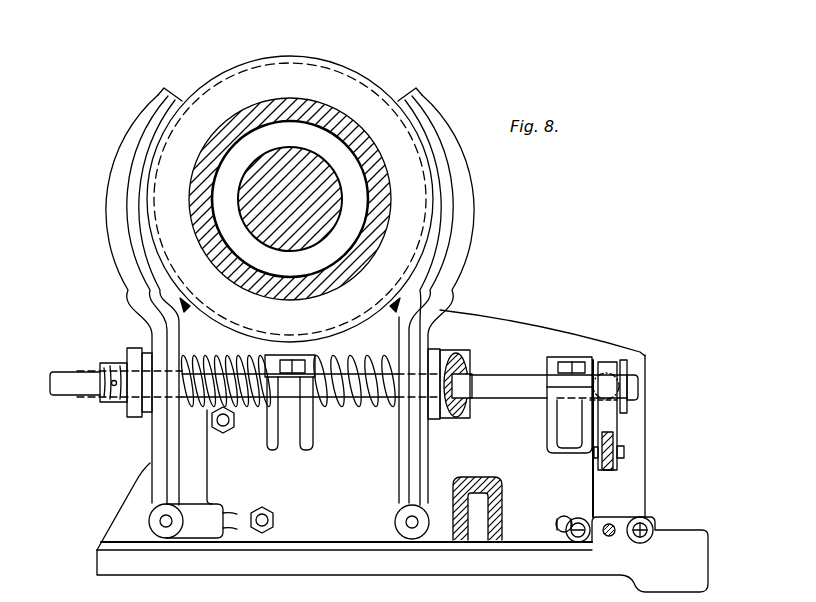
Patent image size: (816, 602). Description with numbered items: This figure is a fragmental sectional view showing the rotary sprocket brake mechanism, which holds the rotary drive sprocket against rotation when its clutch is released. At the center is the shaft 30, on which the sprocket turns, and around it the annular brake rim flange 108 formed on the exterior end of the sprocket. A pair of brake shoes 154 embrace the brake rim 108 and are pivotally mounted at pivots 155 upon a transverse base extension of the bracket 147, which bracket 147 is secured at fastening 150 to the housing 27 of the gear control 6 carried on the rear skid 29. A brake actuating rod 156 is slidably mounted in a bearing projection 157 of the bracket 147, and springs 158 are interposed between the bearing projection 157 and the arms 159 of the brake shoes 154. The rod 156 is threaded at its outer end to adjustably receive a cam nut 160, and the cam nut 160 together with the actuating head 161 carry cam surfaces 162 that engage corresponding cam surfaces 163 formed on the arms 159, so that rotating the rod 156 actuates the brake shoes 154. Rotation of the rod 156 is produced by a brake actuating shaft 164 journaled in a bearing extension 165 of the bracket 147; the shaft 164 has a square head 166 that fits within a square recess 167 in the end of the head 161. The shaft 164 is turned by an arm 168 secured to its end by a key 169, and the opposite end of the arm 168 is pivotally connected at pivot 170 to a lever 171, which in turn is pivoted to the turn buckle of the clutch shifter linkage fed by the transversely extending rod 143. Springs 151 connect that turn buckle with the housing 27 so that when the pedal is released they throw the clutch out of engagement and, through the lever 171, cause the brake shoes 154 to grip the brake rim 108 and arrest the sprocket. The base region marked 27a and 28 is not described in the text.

The gear control 6 is at (547, 323).
The housing 27 is at (648, 474).
The base ramp 27a is at (128, 488).
The base foot 28 is at (577, 565).
The rear skid 29 is at (7, 554).
The shaft 30 is at (283, 165).
The annular brake rim flange 108 is at (356, 82).
The transversely extending rod 143 is at (614, 522).
The bracket 147 is at (335, 520).
The securing means 150 is at (556, 518).
The springs 151 is at (585, 519).
The brake shoes 154 is at (147, 147).
The pivotal mounting 155 is at (158, 521).
The brake actuating rod 156 is at (357, 408).
The bearing projection 157 is at (290, 390).
The springs 158 is at (223, 358).
The arms 159 is at (158, 340).
The cam nut 160 is at (127, 411).
The actuating head 161 is at (463, 352).
The cam surfaces 162 is at (147, 367).
The cam surfaces 163 is at (147, 372).
The brake actuating shaft 164 is at (521, 397).
The bearing extension 165 is at (562, 352).
The square head 166 is at (460, 423).
The square recess 167 is at (472, 407).
The arm 168 is at (613, 423).
The key 169 is at (622, 373).
The pivotal connection 170 is at (624, 452).
The lever 171 is at (608, 470).